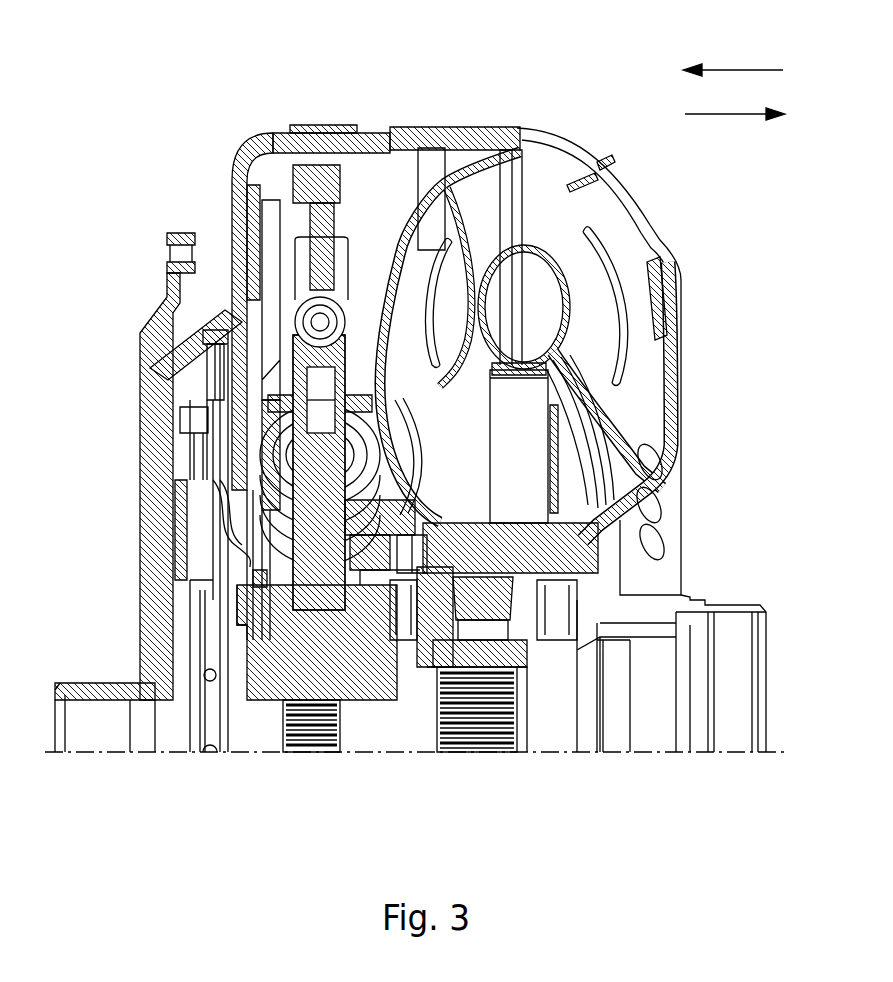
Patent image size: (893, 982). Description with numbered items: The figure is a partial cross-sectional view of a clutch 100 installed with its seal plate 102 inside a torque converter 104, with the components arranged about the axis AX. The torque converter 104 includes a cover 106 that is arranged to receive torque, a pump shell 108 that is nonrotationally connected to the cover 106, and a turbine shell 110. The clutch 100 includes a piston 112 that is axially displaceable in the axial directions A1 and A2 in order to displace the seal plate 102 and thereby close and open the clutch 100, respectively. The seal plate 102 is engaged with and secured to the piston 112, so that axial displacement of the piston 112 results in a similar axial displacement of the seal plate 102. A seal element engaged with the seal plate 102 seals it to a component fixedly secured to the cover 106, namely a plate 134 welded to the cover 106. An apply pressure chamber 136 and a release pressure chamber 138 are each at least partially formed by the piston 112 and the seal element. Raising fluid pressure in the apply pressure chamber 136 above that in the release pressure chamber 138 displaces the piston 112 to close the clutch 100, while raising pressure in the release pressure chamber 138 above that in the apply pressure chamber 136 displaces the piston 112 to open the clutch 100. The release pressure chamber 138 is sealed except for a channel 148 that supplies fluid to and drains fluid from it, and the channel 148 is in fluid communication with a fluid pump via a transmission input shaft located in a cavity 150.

The clutch 100 is at (186, 293).
The seal plate 102 is at (222, 333).
The torque converter 104 is at (145, 125).
The cover 106 is at (267, 133).
The pump shell 108 is at (635, 200).
The turbine shell 110 is at (455, 128).
The piston 112 is at (222, 133).
The plate 134 is at (218, 330).
The apply pressure chamber 136 is at (265, 388).
The release pressure chamber 138 is at (200, 518).
The channel 148 is at (200, 633).
The cavity 150 is at (735, 652).
The axial direction A1 is at (727, 70).
The axial direction A2 is at (735, 115).
The axis AX is at (650, 752).